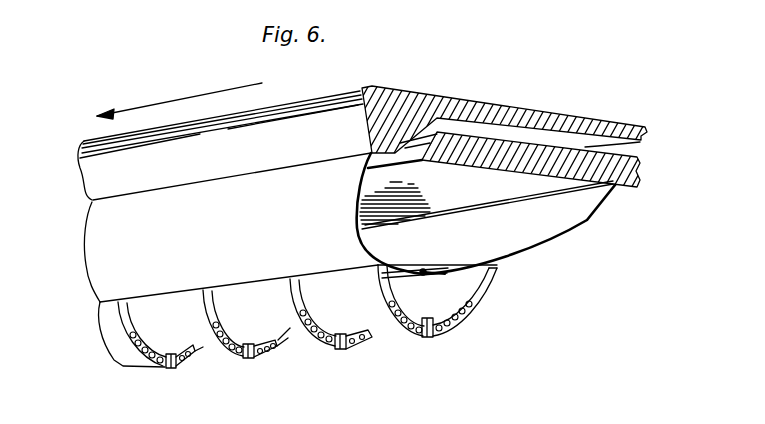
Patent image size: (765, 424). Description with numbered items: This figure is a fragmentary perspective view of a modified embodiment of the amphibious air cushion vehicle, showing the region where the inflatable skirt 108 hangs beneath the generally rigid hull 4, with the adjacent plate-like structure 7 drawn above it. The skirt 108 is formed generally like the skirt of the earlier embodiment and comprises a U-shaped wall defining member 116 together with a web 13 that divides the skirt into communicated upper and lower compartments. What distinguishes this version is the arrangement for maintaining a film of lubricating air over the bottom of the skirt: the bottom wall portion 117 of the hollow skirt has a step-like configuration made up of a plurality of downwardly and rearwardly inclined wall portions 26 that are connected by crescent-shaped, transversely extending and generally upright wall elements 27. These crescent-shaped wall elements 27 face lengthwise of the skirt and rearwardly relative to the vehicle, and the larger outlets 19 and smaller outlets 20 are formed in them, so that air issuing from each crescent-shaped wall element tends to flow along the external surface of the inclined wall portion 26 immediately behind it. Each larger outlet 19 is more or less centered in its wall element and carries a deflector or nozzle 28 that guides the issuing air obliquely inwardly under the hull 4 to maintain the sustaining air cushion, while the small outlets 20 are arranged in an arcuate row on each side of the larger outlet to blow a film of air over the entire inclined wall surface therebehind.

The hull 4 is at (377, 87).
The plate 7 is at (500, 127).
The web 13 is at (480, 284).
The larger outlets 19 is at (447, 330).
The smaller outlets 20 is at (323, 340).
The inclined wall portions 26 is at (122, 364).
The crescent-shaped wall elements 27 is at (150, 364).
The deflector or nozzle 28 is at (167, 369).
The inflatable skirt 108 is at (107, 244).
The U-shaped wall defining member 116 is at (593, 218).
The bottom wall portion 117 is at (283, 329).